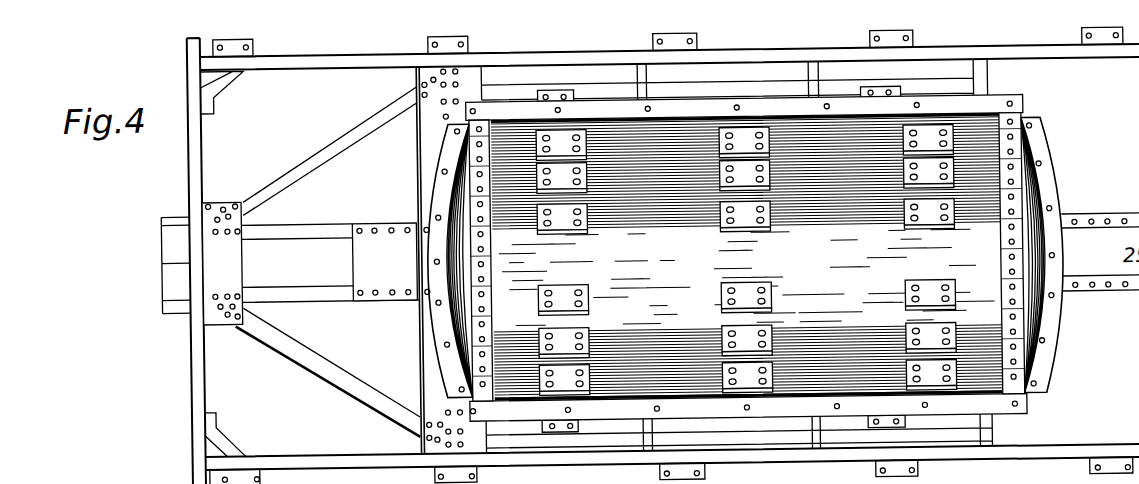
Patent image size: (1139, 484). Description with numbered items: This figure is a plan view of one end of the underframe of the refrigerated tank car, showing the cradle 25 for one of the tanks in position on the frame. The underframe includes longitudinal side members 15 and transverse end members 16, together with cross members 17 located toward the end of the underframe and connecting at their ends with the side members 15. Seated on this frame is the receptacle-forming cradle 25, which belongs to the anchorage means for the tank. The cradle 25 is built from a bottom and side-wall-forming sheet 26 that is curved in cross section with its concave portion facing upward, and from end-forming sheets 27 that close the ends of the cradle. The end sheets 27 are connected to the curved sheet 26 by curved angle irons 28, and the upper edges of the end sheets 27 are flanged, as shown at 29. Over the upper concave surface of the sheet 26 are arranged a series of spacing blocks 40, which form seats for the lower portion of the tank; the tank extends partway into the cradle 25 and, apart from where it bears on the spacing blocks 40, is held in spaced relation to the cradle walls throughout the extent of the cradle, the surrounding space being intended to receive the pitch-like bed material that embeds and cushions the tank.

The side members 15 is at (573, 58).
The end members 16 is at (196, 372).
The cross members 17 is at (425, 353).
The cradle 25 is at (728, 108).
The bottom and side-wall-forming sheet 26 is at (746, 258).
The end-forming sheets 27 is at (440, 211).
The curved angle irons 28 is at (488, 263).
The flange 29 is at (438, 188).
The spacing blocks 40 is at (900, 216).